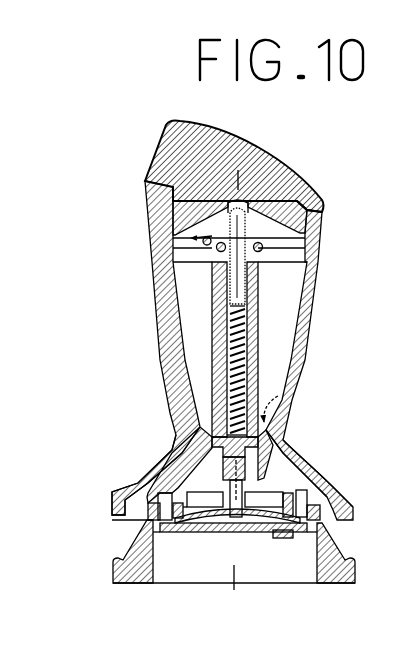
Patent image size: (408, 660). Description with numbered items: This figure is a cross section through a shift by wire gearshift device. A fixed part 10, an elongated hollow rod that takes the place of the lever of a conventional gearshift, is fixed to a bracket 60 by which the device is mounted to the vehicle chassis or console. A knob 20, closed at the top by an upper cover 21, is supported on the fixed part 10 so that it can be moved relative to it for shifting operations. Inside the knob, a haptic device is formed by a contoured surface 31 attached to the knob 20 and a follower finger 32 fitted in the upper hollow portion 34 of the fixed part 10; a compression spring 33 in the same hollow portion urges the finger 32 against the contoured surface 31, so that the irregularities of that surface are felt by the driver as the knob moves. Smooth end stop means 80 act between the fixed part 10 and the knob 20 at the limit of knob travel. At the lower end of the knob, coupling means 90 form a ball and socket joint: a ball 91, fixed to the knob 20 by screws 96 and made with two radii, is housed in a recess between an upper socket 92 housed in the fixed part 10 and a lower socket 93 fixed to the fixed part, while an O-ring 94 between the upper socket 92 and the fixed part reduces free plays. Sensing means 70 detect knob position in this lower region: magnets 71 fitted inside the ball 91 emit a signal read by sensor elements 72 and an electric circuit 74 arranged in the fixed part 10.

The fixed part 10 is at (204, 392).
The knob 20 is at (145, 255).
The upper cover 21 is at (160, 155).
The contoured surface 31 is at (167, 217).
The follower finger 32 is at (303, 204).
The compression spring 33 is at (226, 356).
The upper hollow portion 34 is at (229, 312).
The bracket 60 is at (107, 575).
The sensing means 70 is at (177, 548).
The magnets 71 is at (210, 528).
The sensor elements 72 is at (240, 533).
The electric circuit 74 is at (268, 530).
The smooth end stop means 80 is at (264, 247).
The coupling means 90 is at (305, 377).
The ball 91 is at (255, 470).
The upper socket 92 is at (175, 448).
The lower socket 93 is at (150, 512).
The O-ring 94 is at (276, 440).
The screws 96 is at (156, 497).